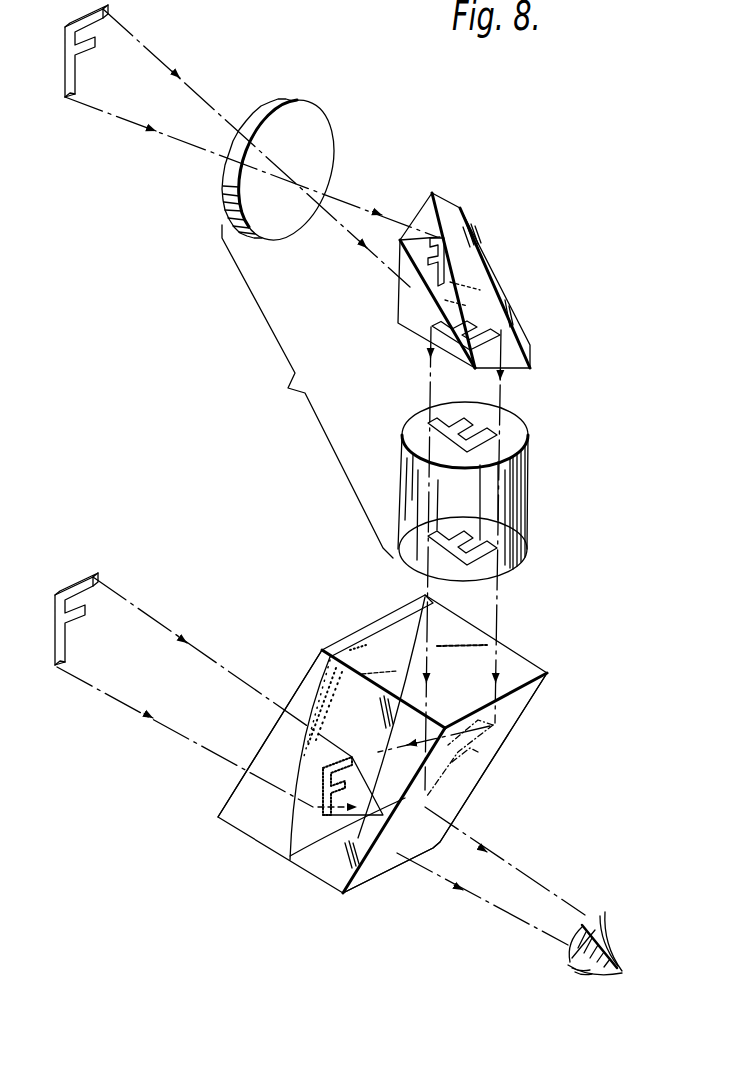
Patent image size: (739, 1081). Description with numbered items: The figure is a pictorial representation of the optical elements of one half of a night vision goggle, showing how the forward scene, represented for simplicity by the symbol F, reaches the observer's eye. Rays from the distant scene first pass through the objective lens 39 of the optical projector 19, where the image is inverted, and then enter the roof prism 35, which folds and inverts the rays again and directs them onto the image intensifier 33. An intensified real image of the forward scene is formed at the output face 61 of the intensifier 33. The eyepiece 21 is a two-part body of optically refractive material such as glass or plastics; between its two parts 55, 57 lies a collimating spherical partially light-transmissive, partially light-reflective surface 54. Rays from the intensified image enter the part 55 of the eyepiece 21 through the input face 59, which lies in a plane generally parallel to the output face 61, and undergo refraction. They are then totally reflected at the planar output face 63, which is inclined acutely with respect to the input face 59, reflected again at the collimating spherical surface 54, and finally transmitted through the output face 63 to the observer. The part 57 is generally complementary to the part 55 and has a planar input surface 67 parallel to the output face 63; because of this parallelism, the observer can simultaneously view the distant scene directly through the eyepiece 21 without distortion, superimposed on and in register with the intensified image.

The optical projector 19 is at (288, 388).
The objective lens 39 is at (334, 118).
The roof prism 35 is at (511, 286).
The image intensifier 33 is at (495, 490).
The output face of the image intensifier 61 is at (508, 560).
The eyepiece 21 is at (391, 747).
The input face 59 is at (530, 665).
The output face 63 is at (513, 717).
The part of the eyepiece 55 is at (473, 793).
The part of the eyepiece 57 is at (230, 760).
The input surface 67 is at (303, 672).
The collimating spherical partially light-transmissive, partially light-reflective s 54 is at (305, 840).